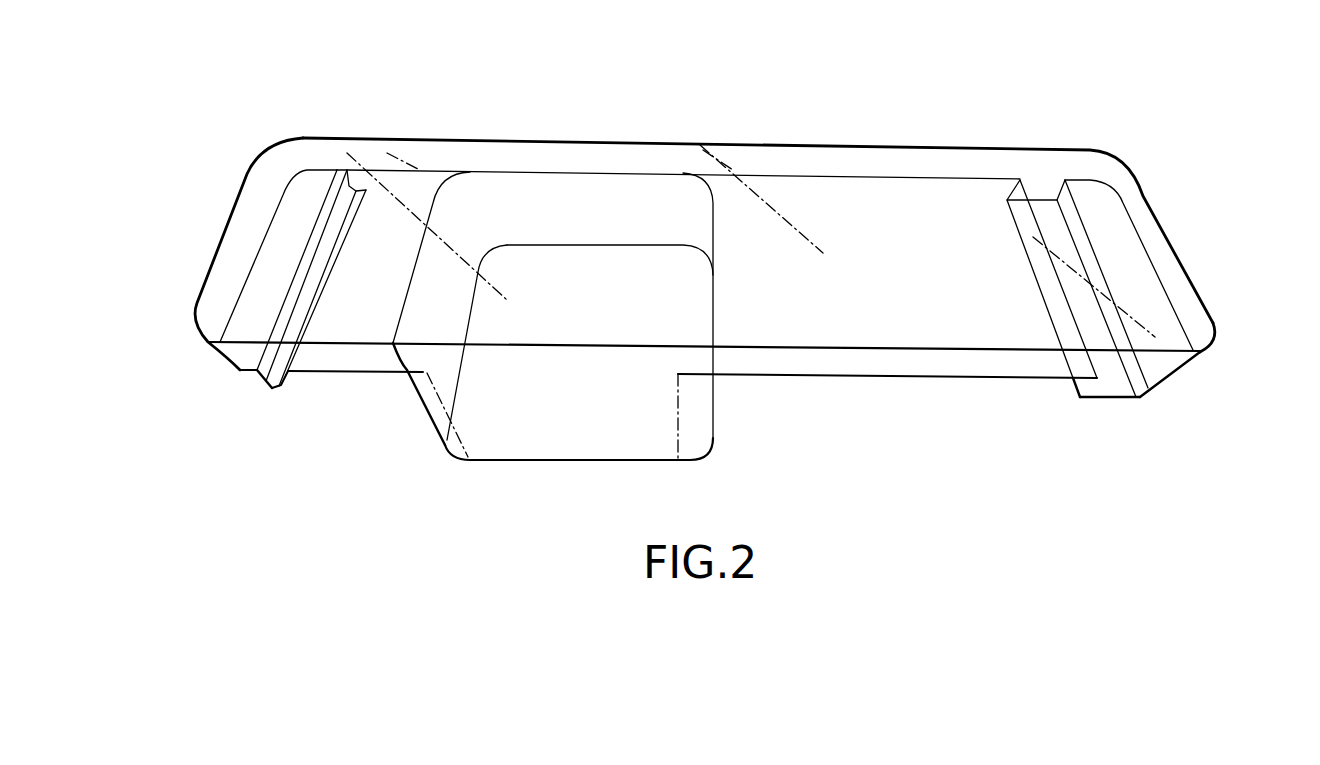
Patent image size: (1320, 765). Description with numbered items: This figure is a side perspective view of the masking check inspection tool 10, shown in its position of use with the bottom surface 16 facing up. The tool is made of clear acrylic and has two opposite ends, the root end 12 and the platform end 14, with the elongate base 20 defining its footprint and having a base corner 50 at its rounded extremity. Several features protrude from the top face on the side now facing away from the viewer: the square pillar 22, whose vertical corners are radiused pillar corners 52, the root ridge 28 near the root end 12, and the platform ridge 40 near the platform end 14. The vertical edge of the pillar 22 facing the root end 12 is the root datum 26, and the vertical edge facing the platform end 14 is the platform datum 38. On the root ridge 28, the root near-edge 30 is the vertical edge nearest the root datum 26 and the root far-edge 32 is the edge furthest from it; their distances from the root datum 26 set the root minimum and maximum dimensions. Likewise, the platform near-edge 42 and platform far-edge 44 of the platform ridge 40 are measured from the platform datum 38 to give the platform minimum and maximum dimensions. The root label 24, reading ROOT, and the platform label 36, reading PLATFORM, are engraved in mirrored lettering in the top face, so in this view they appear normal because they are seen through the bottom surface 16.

The inspection tool 10 is at (1148, 116).
The root end 12 is at (1220, 213).
The platform end 14 is at (183, 212).
The bottom surface 16 is at (868, 150).
The base 20 is at (878, 362).
The pillar 22 is at (572, 417).
The root label 24 is at (986, 197).
The root datum 26 is at (715, 382).
The root ridge 28 is at (1107, 398).
The root near-edge 30 is at (1083, 386).
The root far-edge 32 is at (1147, 387).
The platform label 36 is at (402, 160).
The platform datum 38 is at (427, 381).
The platform ridge 40 is at (272, 390).
The platform near-edge 42 is at (285, 378).
The platform far-edge 44 is at (258, 372).
The base corner 50 is at (1212, 352).
The pillar corner 52 is at (713, 440).